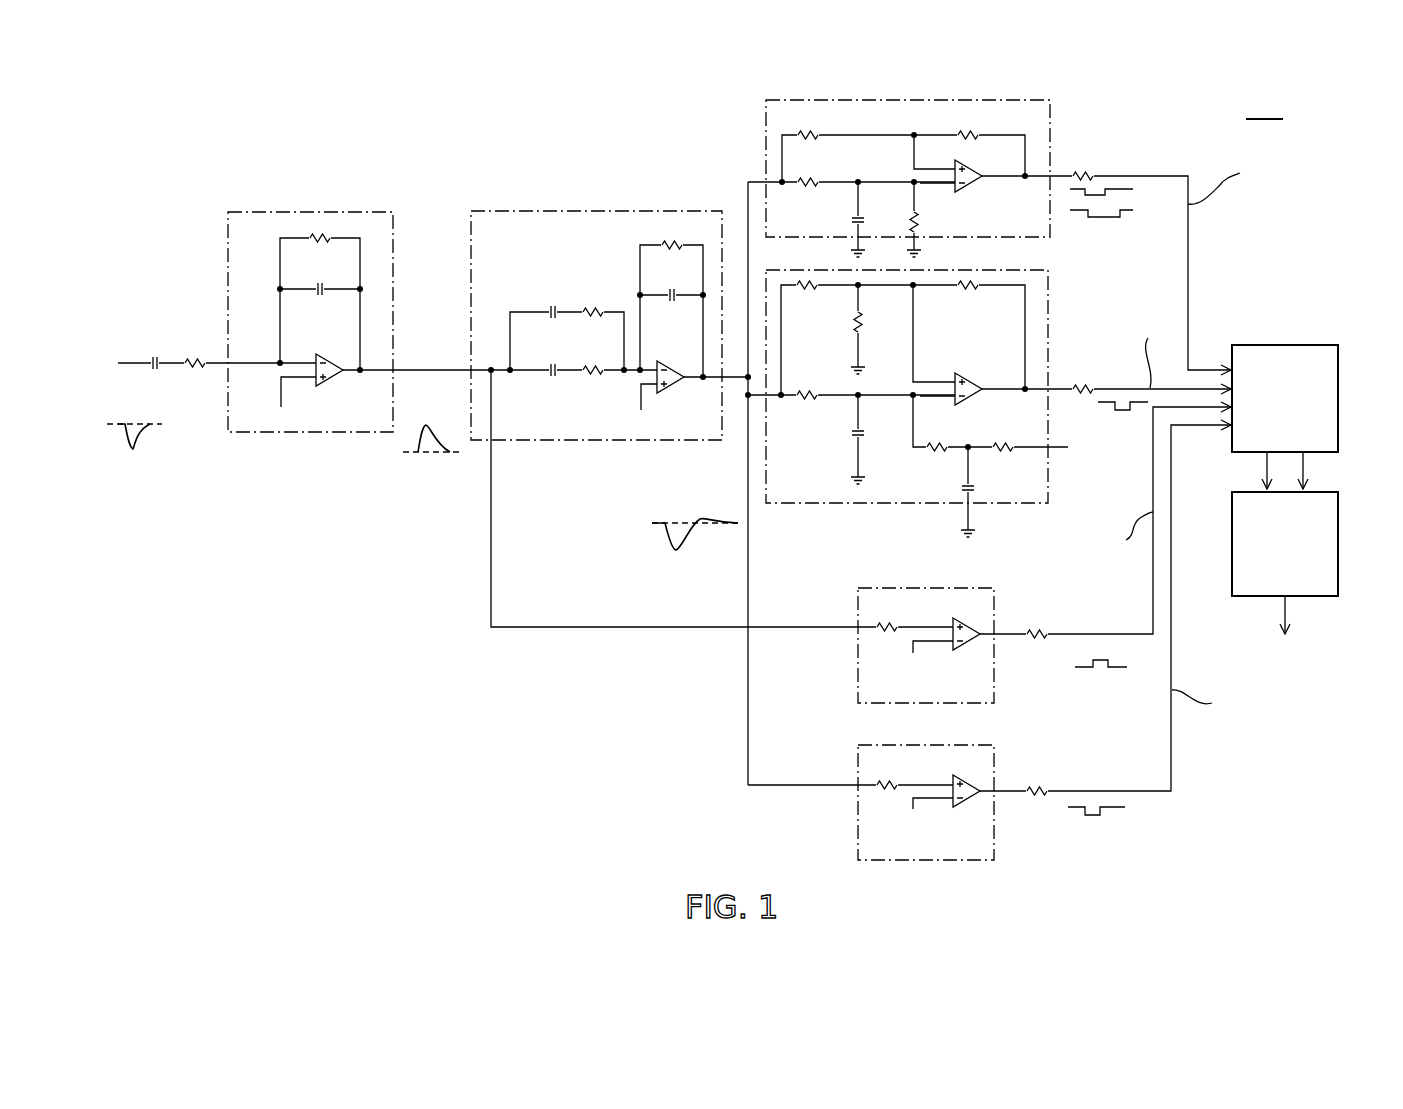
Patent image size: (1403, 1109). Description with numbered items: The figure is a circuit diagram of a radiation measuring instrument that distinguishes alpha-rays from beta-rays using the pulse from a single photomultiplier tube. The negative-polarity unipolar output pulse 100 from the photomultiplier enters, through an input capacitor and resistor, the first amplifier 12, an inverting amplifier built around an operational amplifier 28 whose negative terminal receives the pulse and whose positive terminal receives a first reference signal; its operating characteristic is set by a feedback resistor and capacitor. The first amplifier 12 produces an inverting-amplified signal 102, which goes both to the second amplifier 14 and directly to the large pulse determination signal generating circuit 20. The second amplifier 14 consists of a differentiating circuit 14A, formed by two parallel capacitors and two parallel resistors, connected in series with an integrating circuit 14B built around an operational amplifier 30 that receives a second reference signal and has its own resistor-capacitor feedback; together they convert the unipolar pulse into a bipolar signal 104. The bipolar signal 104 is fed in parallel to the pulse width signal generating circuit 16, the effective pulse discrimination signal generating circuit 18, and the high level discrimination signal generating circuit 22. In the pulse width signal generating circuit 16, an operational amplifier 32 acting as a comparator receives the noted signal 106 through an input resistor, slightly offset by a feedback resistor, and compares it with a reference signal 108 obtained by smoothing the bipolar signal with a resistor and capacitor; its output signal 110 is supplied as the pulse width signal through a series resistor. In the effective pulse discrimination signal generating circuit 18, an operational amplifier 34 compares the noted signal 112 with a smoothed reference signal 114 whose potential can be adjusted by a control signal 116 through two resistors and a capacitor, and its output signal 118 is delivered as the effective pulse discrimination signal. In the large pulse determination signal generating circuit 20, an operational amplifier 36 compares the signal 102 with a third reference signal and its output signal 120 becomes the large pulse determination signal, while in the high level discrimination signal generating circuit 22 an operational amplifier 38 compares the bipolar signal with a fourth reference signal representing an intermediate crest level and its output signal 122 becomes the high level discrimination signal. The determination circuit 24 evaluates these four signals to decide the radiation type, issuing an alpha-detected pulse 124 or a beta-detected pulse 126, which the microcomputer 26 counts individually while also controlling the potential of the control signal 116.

The first amplifier 12 is at (310, 290).
The second amplifier 14 is at (596, 294).
The differentiating circuit 14A is at (575, 292).
The integrating circuit 14B is at (632, 272).
The pulse width signal generating circuit 16 is at (899, 156).
The effective pulse discrimination signal generating circuit 18 is at (936, 400).
The large pulse determination signal generating circuit 20 is at (756, 536).
The high level discrimination signal generating circuit 22 is at (879, 788).
The determination circuit 24 is at (1300, 345).
The microcomputer 26 is at (1338, 555).
The operational amplifier 28 is at (335, 380).
The operational amplifier 30 is at (677, 390).
The operational amplifier 32 is at (975, 186).
The operational amplifier 34 is at (975, 399).
The operational amplifier 36 is at (966, 648).
The operational amplifier 38 is at (968, 806).
The output pulse 100 is at (125, 363).
The inverting-amplified signal 102 is at (437, 371).
The bipolar signal 104 is at (735, 378).
The noted signal 106 is at (914, 155).
The reference signal 108 is at (940, 184).
The output signal 110 is at (1057, 176).
The noted signal 112 is at (913, 352).
The reference signal 114 is at (948, 397).
The control signal 116 is at (1062, 450).
The output signal 118 is at (1057, 389).
The output signal 120 is at (1005, 634).
The output signal 122 is at (1007, 792).
The α-detected pulse 124 is at (1262, 468).
The β-detected pulse 126 is at (1307, 467).